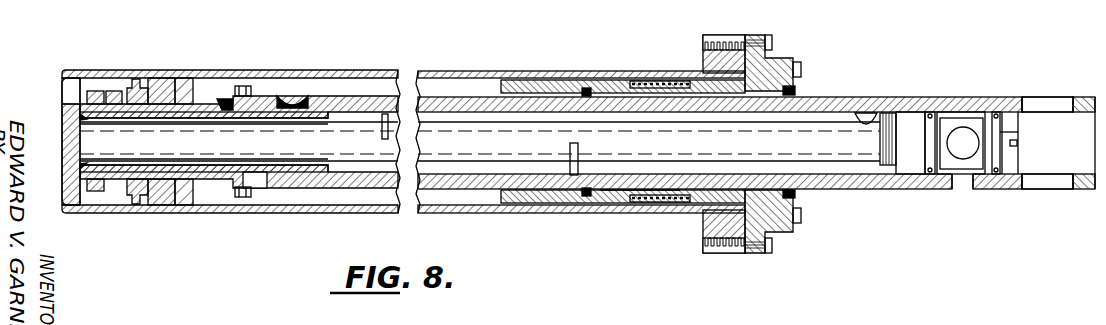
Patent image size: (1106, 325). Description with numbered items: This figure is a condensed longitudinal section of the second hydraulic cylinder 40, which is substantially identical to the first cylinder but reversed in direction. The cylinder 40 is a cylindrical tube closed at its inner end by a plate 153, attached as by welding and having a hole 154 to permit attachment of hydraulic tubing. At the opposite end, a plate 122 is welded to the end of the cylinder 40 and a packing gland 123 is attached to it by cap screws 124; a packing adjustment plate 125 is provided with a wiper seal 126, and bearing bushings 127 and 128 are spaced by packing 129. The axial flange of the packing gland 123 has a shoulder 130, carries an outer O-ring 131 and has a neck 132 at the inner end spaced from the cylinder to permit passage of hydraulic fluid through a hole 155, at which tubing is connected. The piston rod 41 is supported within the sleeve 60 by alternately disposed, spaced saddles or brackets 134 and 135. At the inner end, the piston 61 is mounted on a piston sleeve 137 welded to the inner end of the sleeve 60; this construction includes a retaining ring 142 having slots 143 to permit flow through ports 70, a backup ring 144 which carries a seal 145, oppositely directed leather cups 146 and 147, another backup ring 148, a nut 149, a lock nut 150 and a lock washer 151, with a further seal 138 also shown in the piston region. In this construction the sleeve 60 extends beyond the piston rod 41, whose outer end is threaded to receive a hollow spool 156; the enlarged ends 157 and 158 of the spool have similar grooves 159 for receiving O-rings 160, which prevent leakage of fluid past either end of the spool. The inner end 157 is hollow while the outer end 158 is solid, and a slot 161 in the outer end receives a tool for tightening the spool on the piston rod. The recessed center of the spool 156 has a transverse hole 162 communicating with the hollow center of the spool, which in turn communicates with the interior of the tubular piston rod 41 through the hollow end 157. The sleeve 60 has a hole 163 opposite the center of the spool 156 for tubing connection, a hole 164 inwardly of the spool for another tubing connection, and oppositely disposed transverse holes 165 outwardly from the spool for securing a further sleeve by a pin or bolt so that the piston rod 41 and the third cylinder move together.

The second cylinder 40 is at (381, 71).
The piston rod 41 is at (308, 152).
The sleeve 60 is at (339, 97).
The piston 61 is at (164, 80).
The ports 70 is at (265, 186).
The plate 122 is at (706, 56).
The packing gland 123 is at (774, 64).
The cap screws 124 is at (768, 35).
The packing adjustment plate 125 is at (802, 69).
The wiper seal 126 is at (796, 90).
The bearing bushing 127 is at (691, 200).
The bearing bushing 128 is at (616, 192).
The packing 129 is at (656, 192).
The shoulder 130 is at (640, 84).
The outer O-ring 131 is at (587, 88).
The neck 132 is at (522, 196).
The saddle 134 is at (381, 137).
The saddle 135 is at (569, 147).
The piston sleeve 137 is at (174, 119).
The seal 138 is at (292, 96).
The retaining ring 142 is at (243, 88).
The slots 143 is at (250, 196).
The backup ring 144 is at (200, 197).
The seal 145 is at (224, 110).
The leather cup 146 is at (186, 85).
The leather cup 147 is at (137, 82).
The backup ring 148 is at (138, 200).
The nut 149 is at (112, 91).
The lock nut 150 is at (94, 91).
The lock washer 151 is at (100, 191).
The plate 153 is at (70, 124).
The hole 154 is at (66, 90).
The hole 155 is at (539, 204).
The hollow spool 156 is at (970, 132).
The inner end 157 is at (910, 172).
The outer end 158 is at (1018, 165).
The grooves 159 is at (928, 145).
The O-rings 160 is at (930, 112).
The slot 161 is at (1018, 145).
The transverse hole 162 is at (958, 120).
The hole 163 is at (970, 190).
The hole 164 is at (866, 112).
The transverse holes 165 is at (1058, 105).